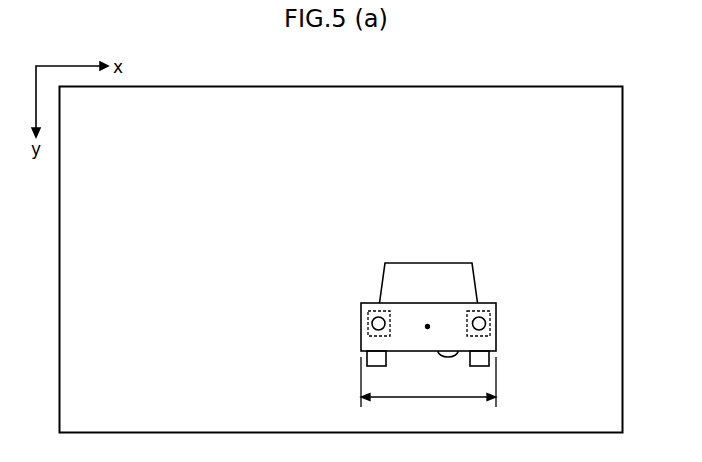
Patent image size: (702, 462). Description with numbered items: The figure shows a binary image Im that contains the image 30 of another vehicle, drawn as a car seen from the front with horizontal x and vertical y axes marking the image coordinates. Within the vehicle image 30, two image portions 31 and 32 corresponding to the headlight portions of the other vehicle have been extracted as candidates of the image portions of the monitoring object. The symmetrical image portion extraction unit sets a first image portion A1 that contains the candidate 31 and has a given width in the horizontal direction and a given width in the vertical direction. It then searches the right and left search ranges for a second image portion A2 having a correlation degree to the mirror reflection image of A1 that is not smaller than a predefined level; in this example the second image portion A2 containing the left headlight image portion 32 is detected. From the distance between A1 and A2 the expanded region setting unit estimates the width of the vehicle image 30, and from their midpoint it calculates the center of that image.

The image of another vehicle 30 is at (437, 263).
The candidate image portion of the monitoring object 31 is at (372, 324).
The image portion of the left headlight 32 is at (487, 322).
The first image portion A1 is at (377, 311).
The second image portion A2 is at (485, 311).
The binary image Im is at (623, 232).